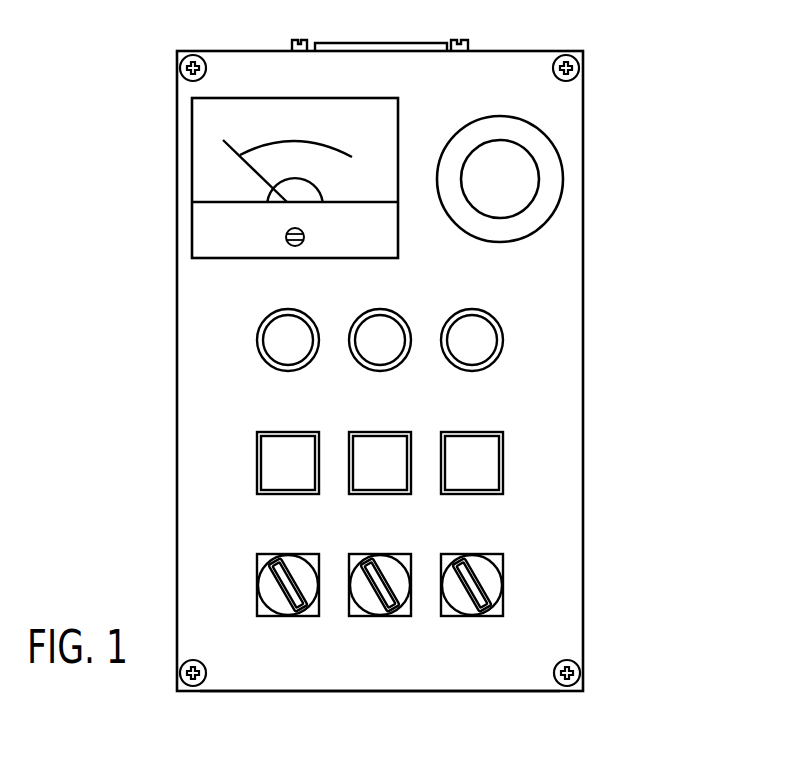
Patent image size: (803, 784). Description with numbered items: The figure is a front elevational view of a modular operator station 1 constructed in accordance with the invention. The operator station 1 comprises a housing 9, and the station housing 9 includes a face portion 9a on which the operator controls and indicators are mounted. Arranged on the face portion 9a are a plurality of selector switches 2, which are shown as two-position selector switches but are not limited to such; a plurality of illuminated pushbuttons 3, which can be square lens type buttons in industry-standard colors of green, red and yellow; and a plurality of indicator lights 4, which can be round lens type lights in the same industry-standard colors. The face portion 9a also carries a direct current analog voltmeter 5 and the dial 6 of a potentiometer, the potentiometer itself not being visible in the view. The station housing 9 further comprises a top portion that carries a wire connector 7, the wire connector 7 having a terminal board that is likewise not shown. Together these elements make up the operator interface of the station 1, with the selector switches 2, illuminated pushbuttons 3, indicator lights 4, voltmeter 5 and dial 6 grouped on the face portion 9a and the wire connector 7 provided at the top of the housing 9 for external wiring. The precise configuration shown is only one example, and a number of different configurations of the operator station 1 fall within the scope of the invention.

The modular operator station 1 is at (652, 253).
The selector switches 2 is at (517, 585).
The illuminated pushbuttons 3 is at (517, 465).
The indicator lights 4 is at (517, 340).
The DC analog voltmeter 5 is at (192, 137).
The dial 6 is at (517, 182).
The wire connector 7 is at (430, 43).
The housing 9 is at (177, 370).
The face portion 9a is at (375, 662).